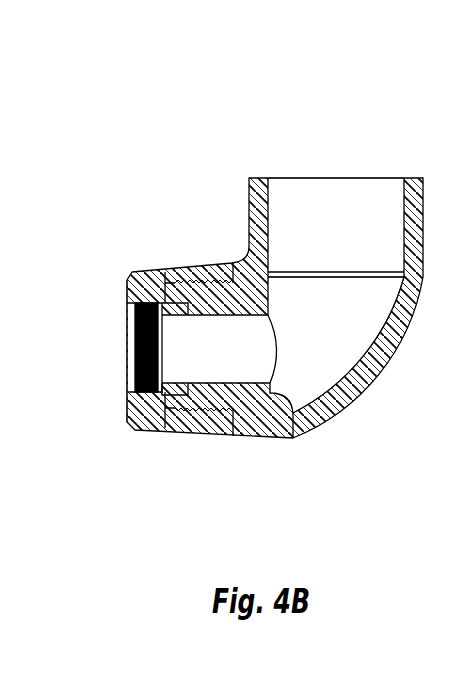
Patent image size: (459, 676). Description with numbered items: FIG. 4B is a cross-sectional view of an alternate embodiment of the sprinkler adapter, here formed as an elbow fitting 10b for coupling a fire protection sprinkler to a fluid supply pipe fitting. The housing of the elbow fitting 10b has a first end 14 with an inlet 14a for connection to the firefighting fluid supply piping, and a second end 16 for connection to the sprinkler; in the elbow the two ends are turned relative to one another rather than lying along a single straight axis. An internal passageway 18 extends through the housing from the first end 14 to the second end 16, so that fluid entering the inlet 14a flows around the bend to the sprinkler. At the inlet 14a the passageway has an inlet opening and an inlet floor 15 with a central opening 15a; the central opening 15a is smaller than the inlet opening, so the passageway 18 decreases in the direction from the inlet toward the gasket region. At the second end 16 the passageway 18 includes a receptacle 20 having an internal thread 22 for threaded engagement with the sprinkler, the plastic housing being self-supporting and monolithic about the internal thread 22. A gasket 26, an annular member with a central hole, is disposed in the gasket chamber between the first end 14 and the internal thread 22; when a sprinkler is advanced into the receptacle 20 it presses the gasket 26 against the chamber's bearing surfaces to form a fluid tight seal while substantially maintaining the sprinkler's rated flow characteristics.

The elbow fitting 10b is at (236, 274).
The first end 14 is at (416, 178).
The inlet 14a is at (364, 166).
The inlet floor 15 is at (293, 438).
The central opening 15a is at (282, 367).
The second end 16 is at (127, 403).
The internal passageway 18 is at (334, 337).
The receptacle 20 is at (126, 335).
The internal thread 22 is at (146, 300).
The gasket 26 is at (176, 410).